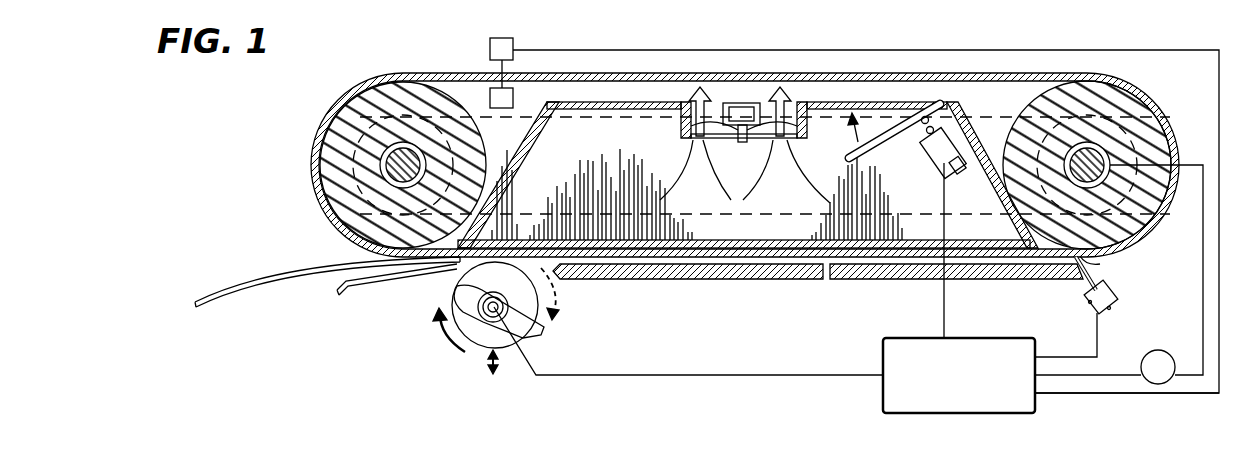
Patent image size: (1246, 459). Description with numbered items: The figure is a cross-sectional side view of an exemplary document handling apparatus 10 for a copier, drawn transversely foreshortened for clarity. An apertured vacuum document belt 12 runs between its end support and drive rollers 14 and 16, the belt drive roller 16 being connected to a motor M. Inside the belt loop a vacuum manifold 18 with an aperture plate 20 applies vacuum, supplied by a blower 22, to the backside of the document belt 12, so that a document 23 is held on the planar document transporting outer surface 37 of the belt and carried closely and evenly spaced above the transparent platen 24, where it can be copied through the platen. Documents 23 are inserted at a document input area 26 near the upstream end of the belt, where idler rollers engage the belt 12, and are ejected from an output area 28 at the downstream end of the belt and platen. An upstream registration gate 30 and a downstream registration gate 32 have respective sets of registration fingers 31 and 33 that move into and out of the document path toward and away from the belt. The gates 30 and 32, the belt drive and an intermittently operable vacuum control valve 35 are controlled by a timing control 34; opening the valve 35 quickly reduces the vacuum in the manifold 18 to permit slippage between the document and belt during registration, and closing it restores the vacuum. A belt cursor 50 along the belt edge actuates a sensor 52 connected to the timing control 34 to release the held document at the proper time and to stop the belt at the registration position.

The document handling apparatus 10 is at (815, 48).
The document belt 12 is at (442, 73).
The end support roller 14 is at (325, 125).
The belt drive roller 16 is at (1155, 122).
The vacuum manifold 18 is at (622, 102).
The aperture plate 20 is at (769, 240).
The blower 22 is at (732, 104).
The document 23 is at (270, 274).
The transparent platen 24 is at (700, 279).
The document input area 26 is at (324, 286).
The output area 28 is at (1107, 273).
The upstream registration gate 30 is at (455, 293).
The registration fingers 31 is at (545, 334).
The downstream registration gate 32 is at (1084, 296).
The registration fingers 33 is at (1100, 264).
The timing control 34 is at (903, 338).
The vacuum control valve 35 is at (908, 130).
The document transporting outer surface 37 is at (826, 279).
The belt cursor 50 is at (514, 88).
The sensor 52 is at (513, 38).